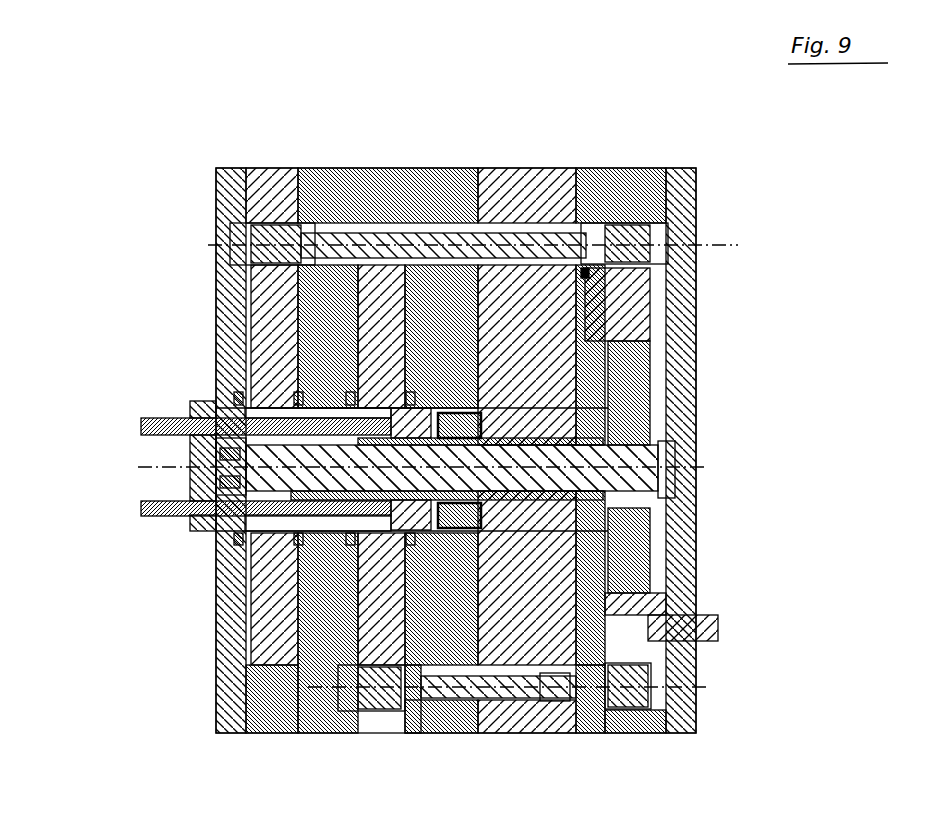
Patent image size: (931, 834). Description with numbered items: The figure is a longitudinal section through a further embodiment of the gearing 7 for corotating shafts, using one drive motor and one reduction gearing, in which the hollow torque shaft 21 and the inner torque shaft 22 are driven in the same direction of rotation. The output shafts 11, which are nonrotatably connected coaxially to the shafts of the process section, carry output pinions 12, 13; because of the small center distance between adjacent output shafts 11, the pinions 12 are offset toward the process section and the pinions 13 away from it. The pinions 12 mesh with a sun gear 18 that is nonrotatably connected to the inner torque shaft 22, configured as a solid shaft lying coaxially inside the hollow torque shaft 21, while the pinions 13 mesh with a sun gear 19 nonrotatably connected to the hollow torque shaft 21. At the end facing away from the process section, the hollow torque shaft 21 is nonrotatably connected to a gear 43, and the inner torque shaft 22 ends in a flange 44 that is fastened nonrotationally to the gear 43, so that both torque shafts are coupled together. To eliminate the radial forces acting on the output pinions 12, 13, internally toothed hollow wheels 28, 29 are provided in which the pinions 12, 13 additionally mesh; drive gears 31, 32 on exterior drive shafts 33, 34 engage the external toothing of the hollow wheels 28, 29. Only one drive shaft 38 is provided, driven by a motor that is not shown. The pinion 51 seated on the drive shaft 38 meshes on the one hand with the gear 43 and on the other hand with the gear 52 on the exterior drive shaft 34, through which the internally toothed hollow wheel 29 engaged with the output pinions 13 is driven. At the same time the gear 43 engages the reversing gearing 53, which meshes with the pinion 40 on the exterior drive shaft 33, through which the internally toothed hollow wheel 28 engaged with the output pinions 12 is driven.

The gearing 7 is at (96, 118).
The output shafts 11 is at (133, 500).
The output pinions 12 is at (243, 396).
The output pinions 13 is at (343, 550).
The sun gear 18 is at (195, 525).
The sun gear 19 is at (345, 405).
The hollow torque shaft 21 is at (567, 410).
The inner torque shaft 22 is at (632, 455).
The internally toothed hollow wheel 28 is at (258, 290).
The internally toothed hollow wheel 29 is at (372, 310).
The drive gear 31 is at (236, 214).
The drive gear 32 is at (373, 687).
The exterior drive shaft 33 is at (363, 228).
The exterior drive shaft 34 is at (442, 683).
The drive shaft 38 is at (710, 640).
The pinion 40 is at (652, 197).
The gear 43 is at (627, 540).
The flange 44 is at (660, 470).
The pinion 51 is at (630, 590).
The gear 52 is at (623, 690).
The reversing gearing 53 is at (643, 290).